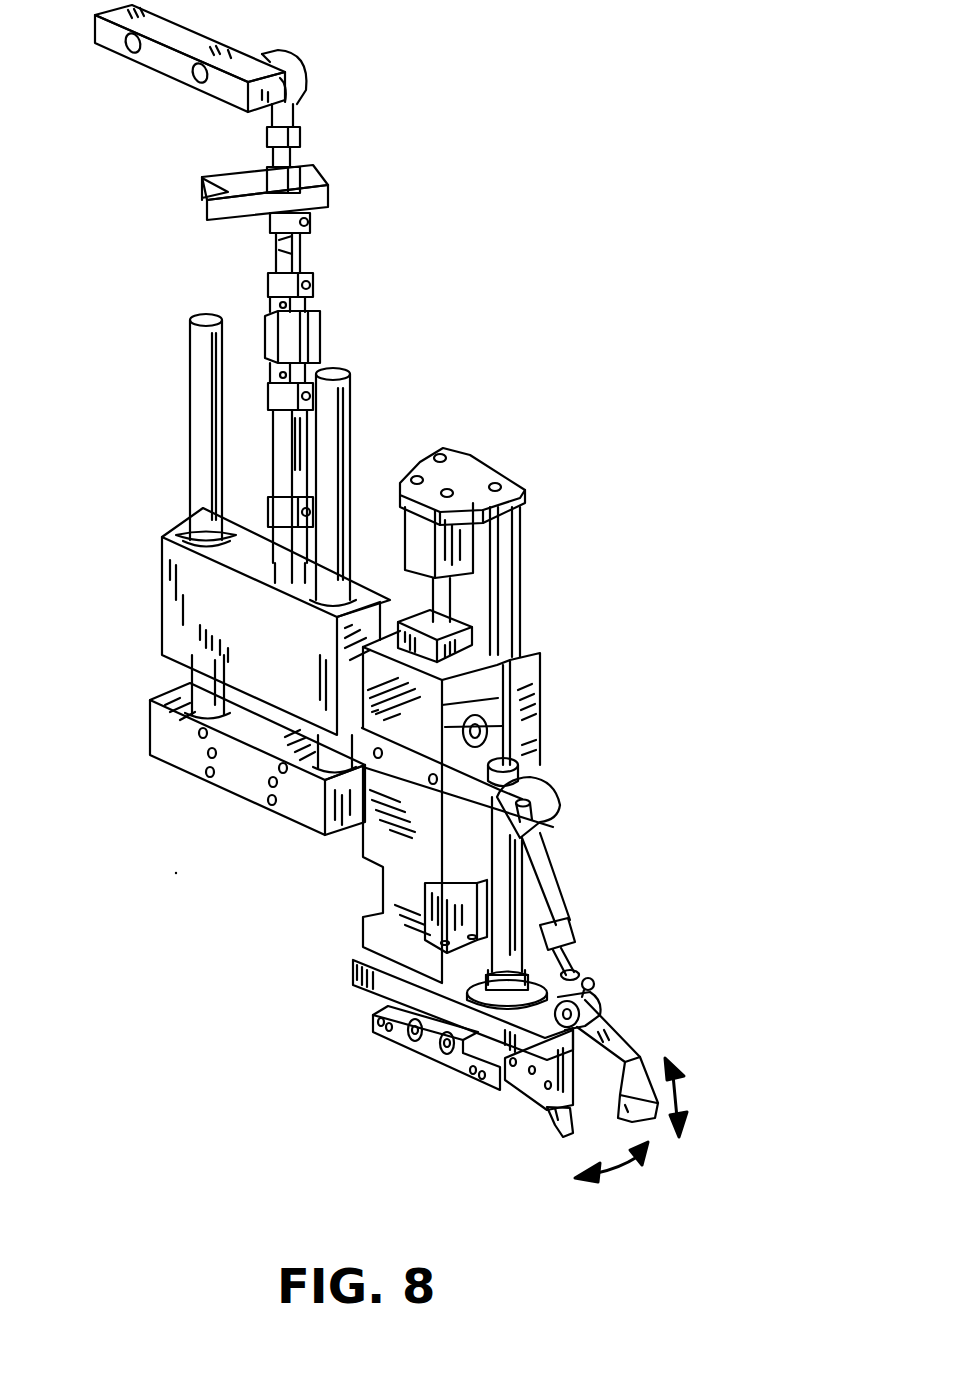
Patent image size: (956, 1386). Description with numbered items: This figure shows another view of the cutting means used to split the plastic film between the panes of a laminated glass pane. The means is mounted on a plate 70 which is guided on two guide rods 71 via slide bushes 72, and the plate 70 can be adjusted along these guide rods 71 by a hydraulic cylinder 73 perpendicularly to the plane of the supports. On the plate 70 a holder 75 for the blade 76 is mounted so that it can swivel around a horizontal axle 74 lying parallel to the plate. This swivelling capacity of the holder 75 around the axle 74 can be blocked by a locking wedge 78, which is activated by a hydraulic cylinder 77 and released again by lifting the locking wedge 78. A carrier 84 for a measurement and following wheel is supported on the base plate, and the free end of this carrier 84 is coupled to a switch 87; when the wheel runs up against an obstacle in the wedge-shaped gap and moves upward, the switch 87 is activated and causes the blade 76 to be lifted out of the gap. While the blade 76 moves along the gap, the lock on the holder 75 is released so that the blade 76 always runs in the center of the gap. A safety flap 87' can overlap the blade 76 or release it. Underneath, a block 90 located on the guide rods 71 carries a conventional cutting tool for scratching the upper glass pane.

The plate 70 is at (197, 625).
The guide rods 71 is at (208, 368).
The slide bushes 72 is at (172, 536).
The hydraulic cylinder 73 is at (298, 340).
The horizontal axle 74 is at (490, 727).
The holder 75 is at (400, 833).
The blade 76 is at (563, 1127).
The hydraulic cylinder 77 is at (460, 547).
The locking wedge 78 is at (463, 637).
The carrier 84 is at (427, 1045).
The switch 87 is at (567, 893).
The gripper arm 87' is at (611, 1014).
The block 90 is at (250, 780).